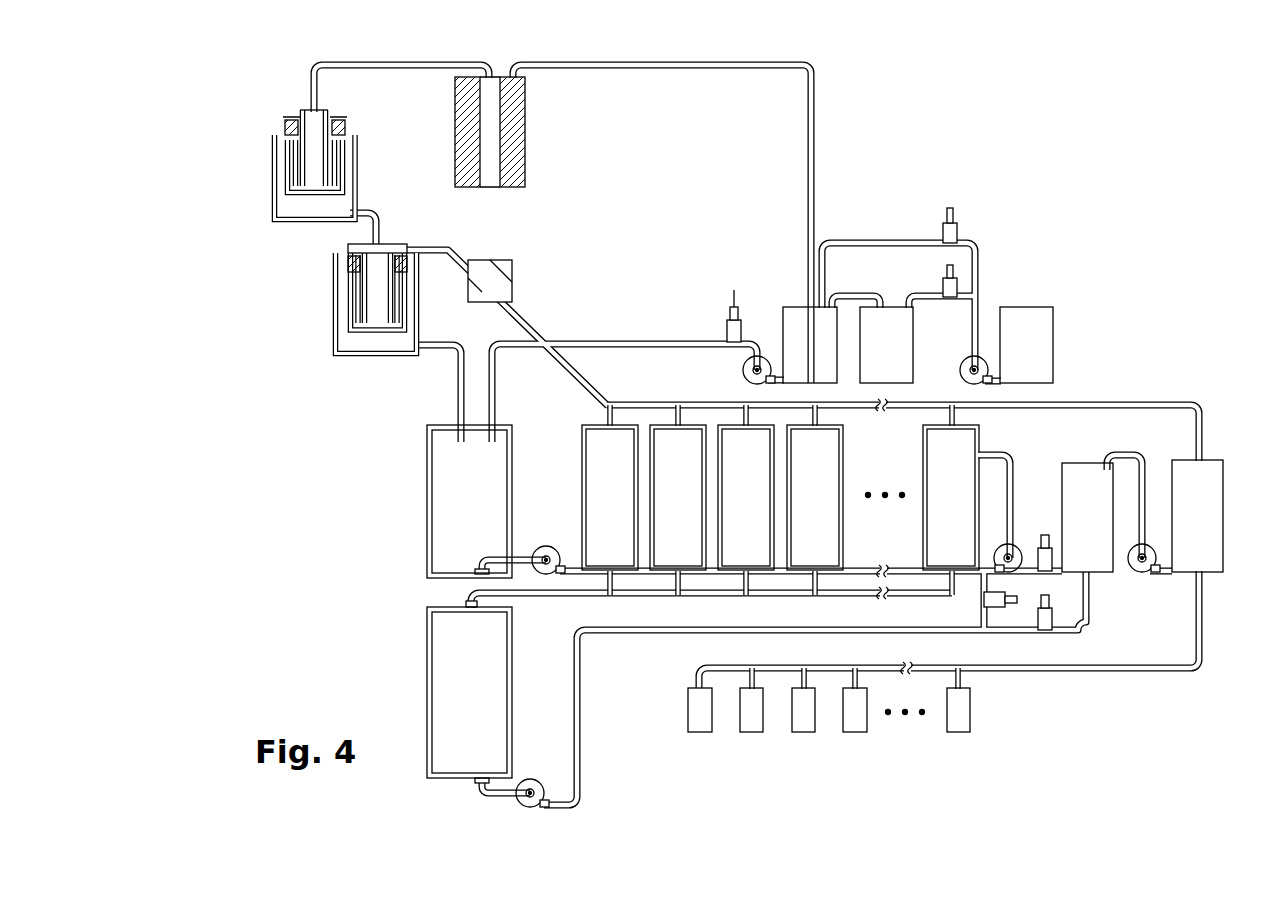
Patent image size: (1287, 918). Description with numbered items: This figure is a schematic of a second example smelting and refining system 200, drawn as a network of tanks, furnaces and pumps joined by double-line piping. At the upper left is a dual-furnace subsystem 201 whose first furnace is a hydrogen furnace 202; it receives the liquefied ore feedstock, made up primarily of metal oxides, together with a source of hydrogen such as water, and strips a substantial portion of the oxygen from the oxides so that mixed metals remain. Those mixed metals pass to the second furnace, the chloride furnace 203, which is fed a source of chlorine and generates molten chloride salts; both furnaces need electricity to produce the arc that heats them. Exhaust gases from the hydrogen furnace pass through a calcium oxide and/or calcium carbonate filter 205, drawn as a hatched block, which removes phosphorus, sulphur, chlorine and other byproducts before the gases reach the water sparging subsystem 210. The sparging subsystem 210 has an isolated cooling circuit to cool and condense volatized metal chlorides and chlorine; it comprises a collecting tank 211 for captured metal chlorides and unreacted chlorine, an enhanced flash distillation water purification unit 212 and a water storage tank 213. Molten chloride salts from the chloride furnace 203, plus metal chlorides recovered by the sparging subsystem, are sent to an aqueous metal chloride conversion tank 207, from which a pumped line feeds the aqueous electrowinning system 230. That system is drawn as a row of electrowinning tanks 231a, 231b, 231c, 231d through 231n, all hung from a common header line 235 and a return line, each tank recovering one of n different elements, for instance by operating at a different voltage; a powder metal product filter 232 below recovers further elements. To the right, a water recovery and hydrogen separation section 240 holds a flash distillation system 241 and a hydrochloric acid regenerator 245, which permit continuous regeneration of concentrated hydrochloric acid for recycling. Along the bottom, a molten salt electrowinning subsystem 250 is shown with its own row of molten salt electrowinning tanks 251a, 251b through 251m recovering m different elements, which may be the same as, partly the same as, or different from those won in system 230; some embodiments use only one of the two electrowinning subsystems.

The smelting/refining system 200 is at (704, 440).
The dual-furnace subsystem 201 is at (220, 235).
The hydrogen furnace 202 is at (272, 165).
The chloride furnace 203 is at (333, 295).
The calcium oxide and/or calcium carbonate filter 205 is at (526, 138).
The aqueous metal chloride conversion tank 207 is at (496, 501).
The water sparging subsystem 210 is at (995, 183).
The collecting tank 211 is at (794, 324).
The enhanced flash distillation water purification unit 212 is at (886, 345).
The water storage tank 213 is at (1026, 345).
The aqueous electrowinning system 230 is at (806, 604).
The electrowinning tank 231a is at (610, 497).
The electrowinning tank 231b is at (678, 497).
The electrowinning tank 231c is at (746, 497).
The electrowinning tank 231d is at (815, 497).
The electrowinning tank 231n is at (951, 497).
The powder metal product filter 232 is at (488, 704).
The supply line 235 is at (1066, 403).
The recovery subsystem 240 is at (1182, 613).
The flash distillation system 241 is at (1087, 517).
The hydrochloric acid regenerator 245 is at (1197, 516).
The molten salt electrowinning subsystem 250 is at (839, 769).
The molten salt electrowinning tank 251a is at (700, 722).
The molten salt electrowinning tank 251b is at (751, 722).
The molten salt electrowinning tank 251m is at (958, 722).